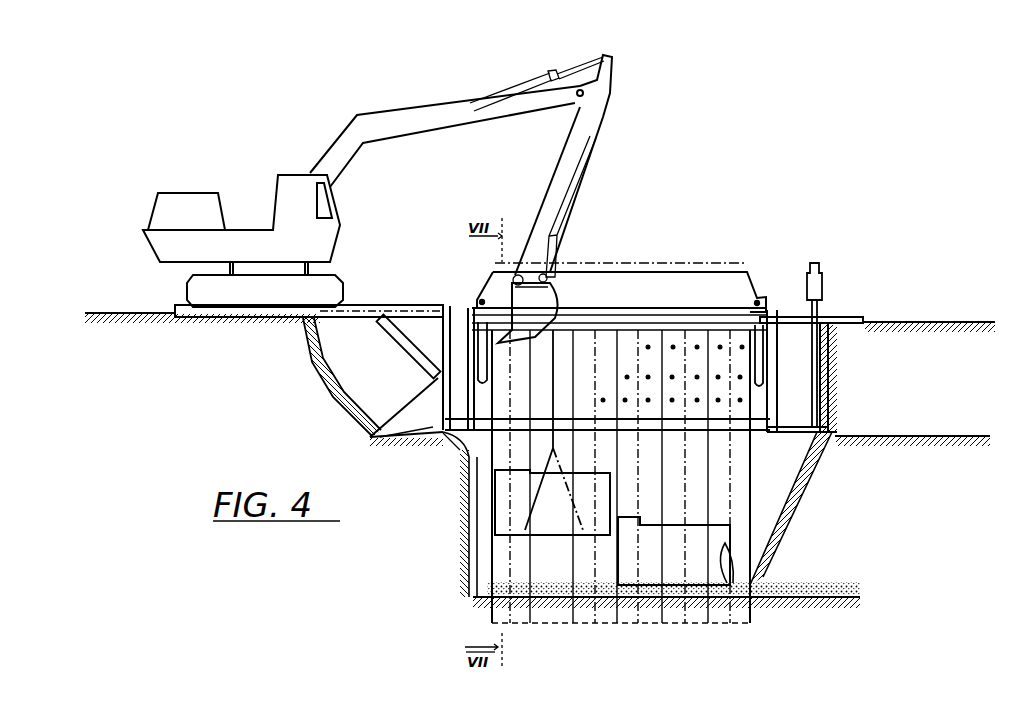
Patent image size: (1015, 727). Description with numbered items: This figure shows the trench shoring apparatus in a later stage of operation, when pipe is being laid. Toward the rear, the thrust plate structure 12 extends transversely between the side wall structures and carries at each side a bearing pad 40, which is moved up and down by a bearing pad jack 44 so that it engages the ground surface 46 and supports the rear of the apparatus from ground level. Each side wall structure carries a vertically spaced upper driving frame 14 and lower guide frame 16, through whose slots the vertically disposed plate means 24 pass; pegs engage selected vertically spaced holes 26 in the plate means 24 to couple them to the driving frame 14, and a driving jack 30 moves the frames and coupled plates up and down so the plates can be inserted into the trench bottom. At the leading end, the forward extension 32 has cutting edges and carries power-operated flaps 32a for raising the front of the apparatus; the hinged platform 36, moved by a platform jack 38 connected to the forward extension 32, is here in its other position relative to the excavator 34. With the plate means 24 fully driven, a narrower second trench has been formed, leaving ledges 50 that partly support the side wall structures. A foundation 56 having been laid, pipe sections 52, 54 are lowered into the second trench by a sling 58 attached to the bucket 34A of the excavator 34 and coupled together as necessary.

The thrust plate structure 12 is at (832, 397).
The driving frame 14 is at (760, 286).
The guide frame 16 is at (717, 433).
The plate means 24 is at (700, 262).
The vertically spaced holes 26 is at (697, 347).
The driving jack 30 is at (762, 353).
The forward extension 32 is at (323, 408).
The power-operated flap 32a is at (433, 433).
The excavator 34 is at (293, 185).
The bucket 34A is at (543, 297).
The platform 36 is at (252, 313).
The platform jack 38 is at (413, 357).
The bearing pad 40 is at (855, 318).
The bearing pad jack 44 is at (823, 287).
The ground surface 46 is at (960, 310).
The ledge 50 is at (907, 437).
The pipe section 52 is at (695, 567).
The pipe section 54 is at (547, 523).
The foundation 56 is at (677, 597).
The sling 58 is at (537, 497).